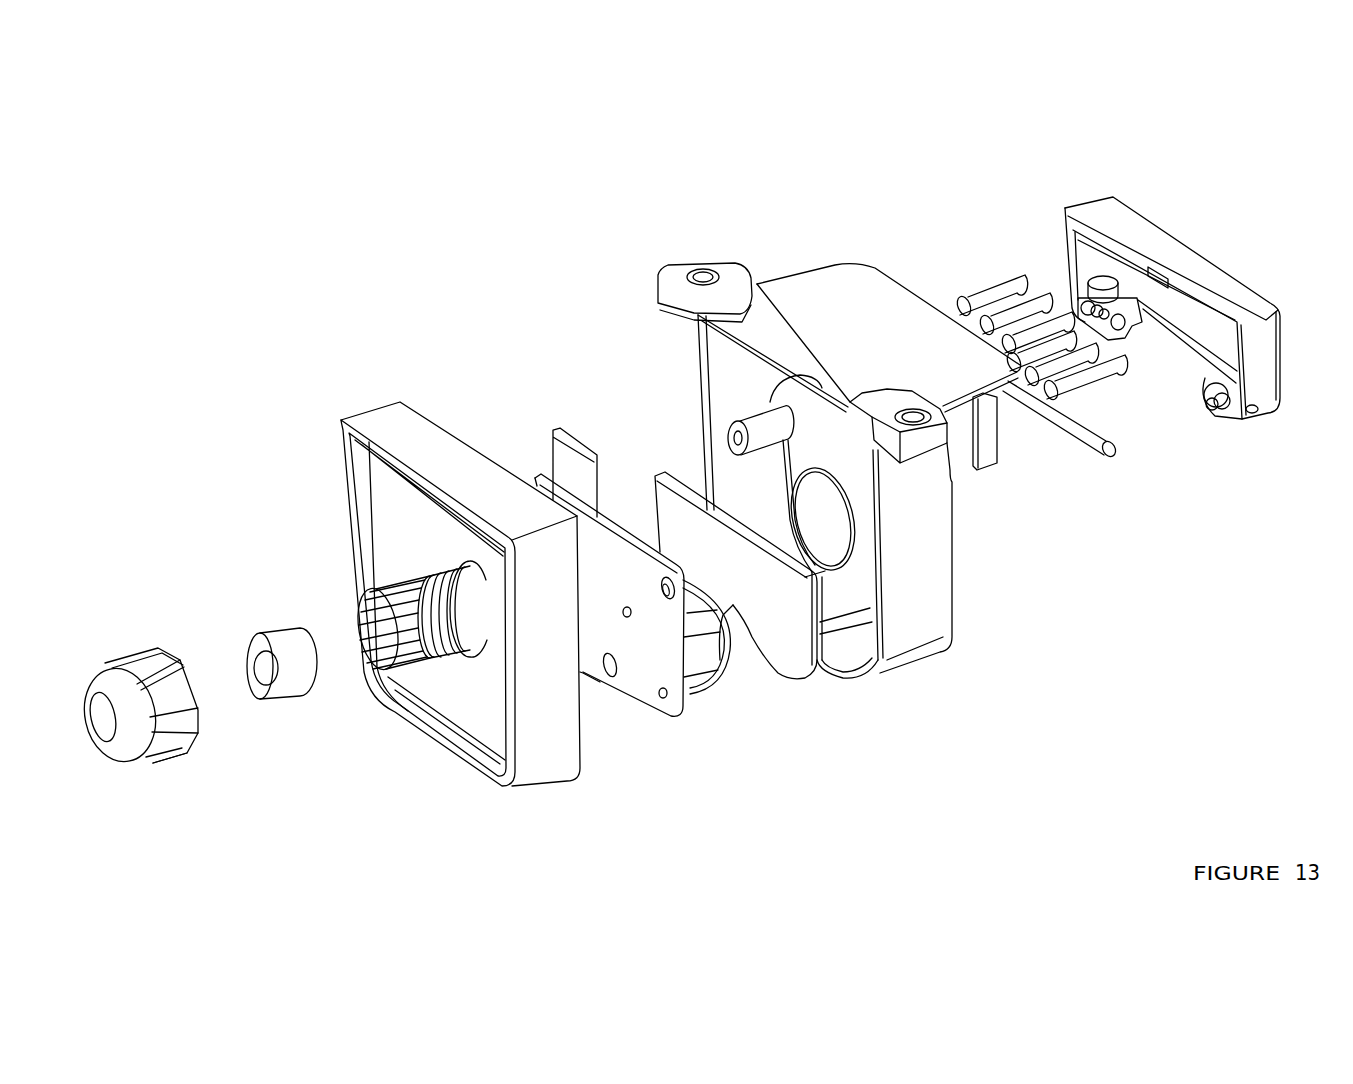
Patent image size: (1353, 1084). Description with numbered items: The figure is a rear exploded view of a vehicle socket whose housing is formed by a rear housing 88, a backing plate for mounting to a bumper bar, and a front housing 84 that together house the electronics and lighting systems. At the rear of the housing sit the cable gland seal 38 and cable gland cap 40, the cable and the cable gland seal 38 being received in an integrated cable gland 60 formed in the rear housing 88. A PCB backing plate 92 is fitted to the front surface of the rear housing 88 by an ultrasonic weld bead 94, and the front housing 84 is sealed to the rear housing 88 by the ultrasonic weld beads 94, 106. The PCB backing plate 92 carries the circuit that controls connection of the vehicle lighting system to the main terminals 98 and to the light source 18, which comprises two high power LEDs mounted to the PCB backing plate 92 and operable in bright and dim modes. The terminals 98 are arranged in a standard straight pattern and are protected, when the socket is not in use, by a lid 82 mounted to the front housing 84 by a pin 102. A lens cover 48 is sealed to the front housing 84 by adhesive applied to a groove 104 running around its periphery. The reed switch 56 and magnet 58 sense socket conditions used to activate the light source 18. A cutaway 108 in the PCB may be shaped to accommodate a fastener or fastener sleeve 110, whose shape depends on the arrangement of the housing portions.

The light source 18 is at (715, 695).
The cable gland seal 38 is at (276, 700).
The cable gland cap 40 is at (142, 762).
The lens cover 48 is at (788, 682).
The reed switch 56 is at (575, 432).
The magnet 58 is at (1102, 276).
The integrated cable gland 60 is at (446, 655).
The lid 82 is at (1209, 253).
The front housing 84 is at (888, 265).
The rear housing 88 is at (386, 702).
The PCB backing plate 92 is at (630, 530).
The ultrasonic weld bead 94 is at (585, 740).
The terminals 98 is at (999, 283).
The pin 102 is at (1060, 420).
The groove 104 is at (826, 500).
The ultrasonic weld bead 106 is at (766, 356).
The cutaway 108 is at (738, 617).
The fastener sleeve 110 is at (839, 597).